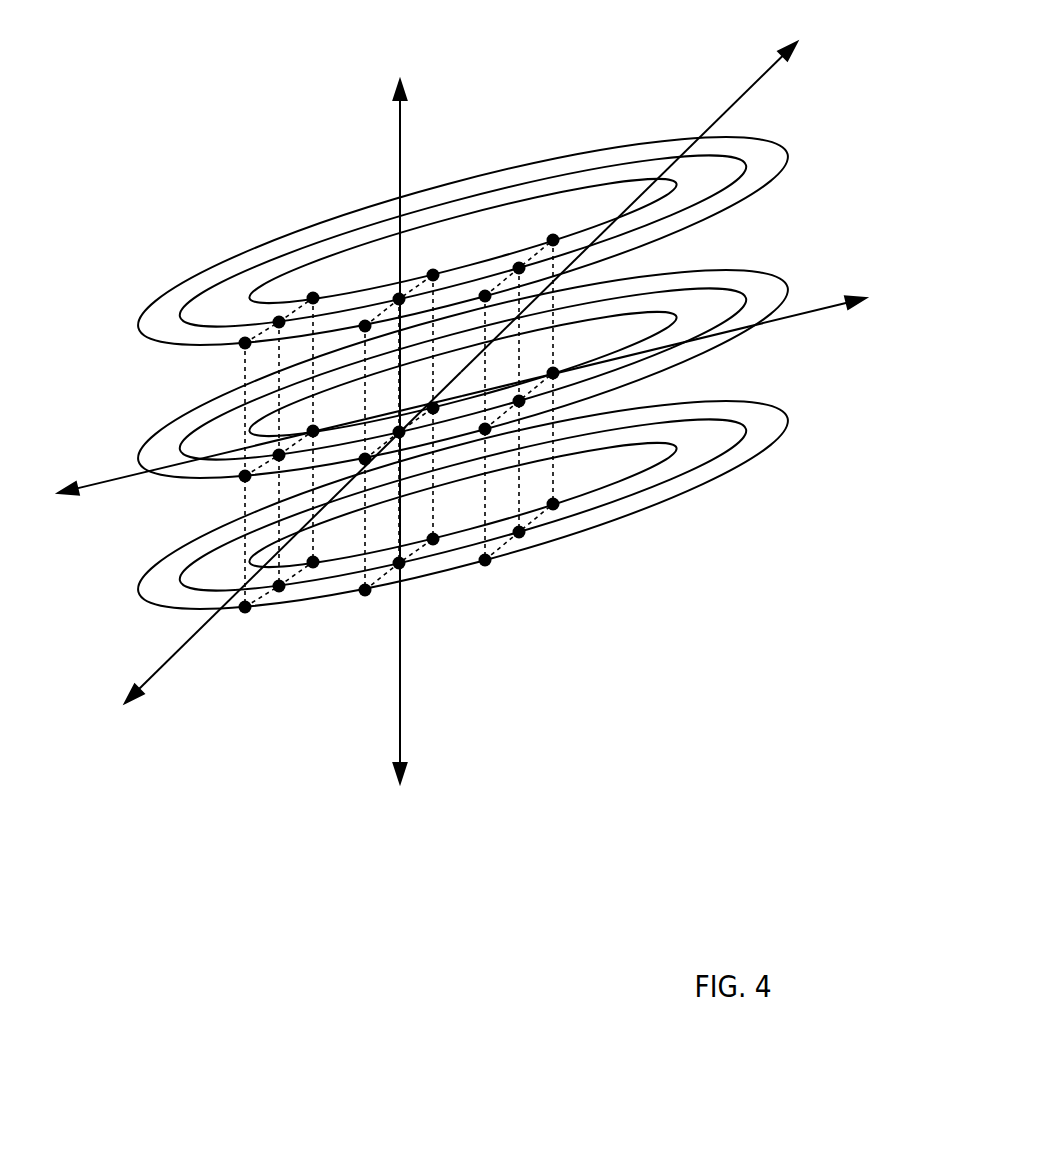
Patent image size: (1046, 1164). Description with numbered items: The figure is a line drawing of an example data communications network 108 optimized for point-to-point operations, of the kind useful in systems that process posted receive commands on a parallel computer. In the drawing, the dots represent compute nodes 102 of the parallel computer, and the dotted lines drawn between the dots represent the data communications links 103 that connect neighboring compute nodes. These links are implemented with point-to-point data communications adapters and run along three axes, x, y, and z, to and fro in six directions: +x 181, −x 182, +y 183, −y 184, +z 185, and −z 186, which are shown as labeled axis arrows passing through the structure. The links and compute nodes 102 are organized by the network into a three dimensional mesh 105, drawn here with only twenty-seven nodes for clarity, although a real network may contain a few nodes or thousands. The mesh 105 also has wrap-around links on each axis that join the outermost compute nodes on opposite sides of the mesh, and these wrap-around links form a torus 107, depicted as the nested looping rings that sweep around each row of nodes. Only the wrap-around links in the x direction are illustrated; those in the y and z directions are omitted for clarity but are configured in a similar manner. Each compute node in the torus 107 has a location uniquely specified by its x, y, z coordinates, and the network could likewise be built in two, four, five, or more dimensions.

The compute nodes 102 is at (485, 563).
The data communications links 103 is at (243, 375).
The three dimensional mesh 105 is at (313, 298).
The torus 107 is at (222, 241).
The data communications network 108 is at (450, 560).
The +x direction 181 is at (872, 331).
The −x direction 182 is at (56, 539).
The +y direction 183 is at (812, 66).
The −y direction 184 is at (122, 756).
The +z direction 185 is at (415, 69).
The −z direction 186 is at (418, 846).